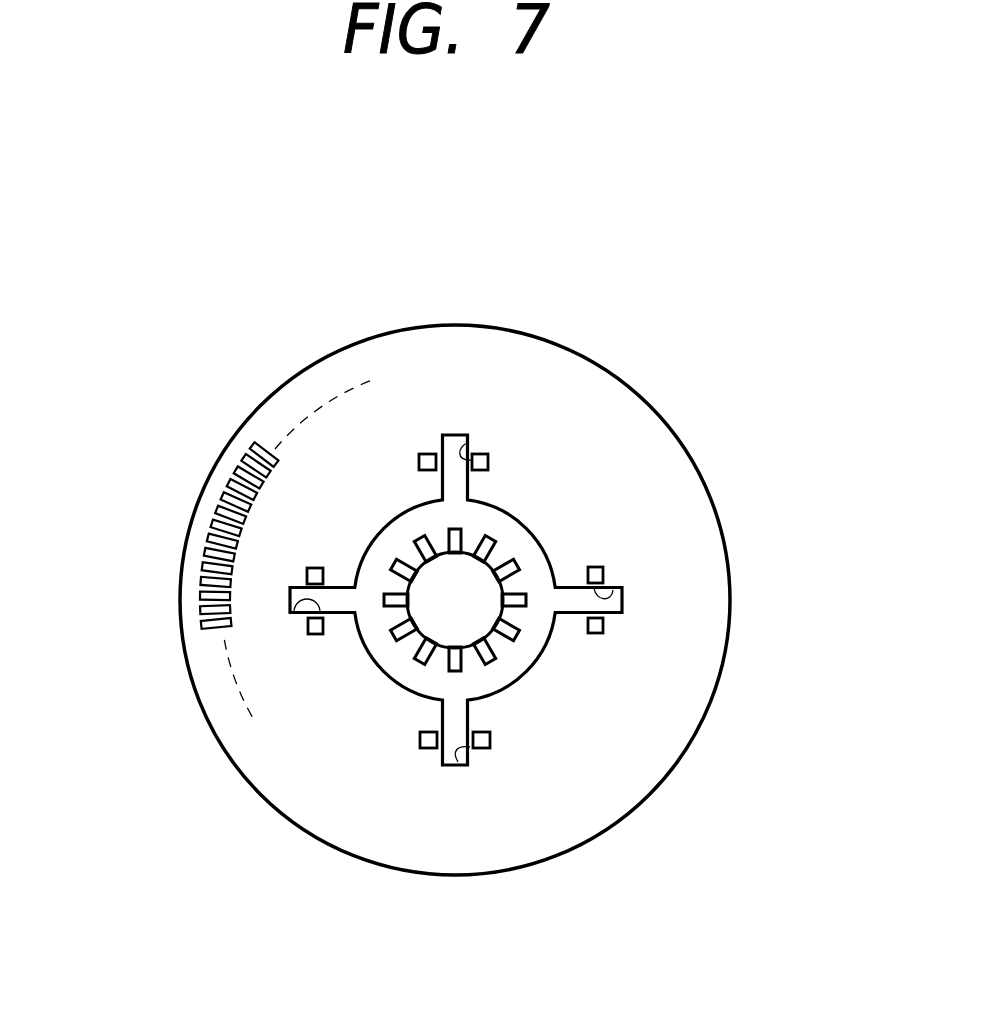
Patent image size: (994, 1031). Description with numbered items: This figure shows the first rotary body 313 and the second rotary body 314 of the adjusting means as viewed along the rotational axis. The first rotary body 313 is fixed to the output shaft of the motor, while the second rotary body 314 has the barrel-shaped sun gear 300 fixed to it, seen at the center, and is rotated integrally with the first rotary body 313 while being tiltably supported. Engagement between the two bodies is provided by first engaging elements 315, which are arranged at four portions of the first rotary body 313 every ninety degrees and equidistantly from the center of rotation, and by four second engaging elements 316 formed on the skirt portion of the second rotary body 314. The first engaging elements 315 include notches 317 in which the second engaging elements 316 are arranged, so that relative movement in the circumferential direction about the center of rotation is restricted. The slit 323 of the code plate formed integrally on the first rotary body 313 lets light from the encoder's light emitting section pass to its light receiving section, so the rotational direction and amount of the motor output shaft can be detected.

The sun gear 300 is at (433, 622).
The first rotary body 313 is at (678, 424).
The second rotary body 314 is at (528, 678).
The first engaging elements 315 is at (419, 458).
The second engaging elements 316 is at (453, 435).
The notches 317 is at (467, 442).
The slit 323 is at (240, 470).